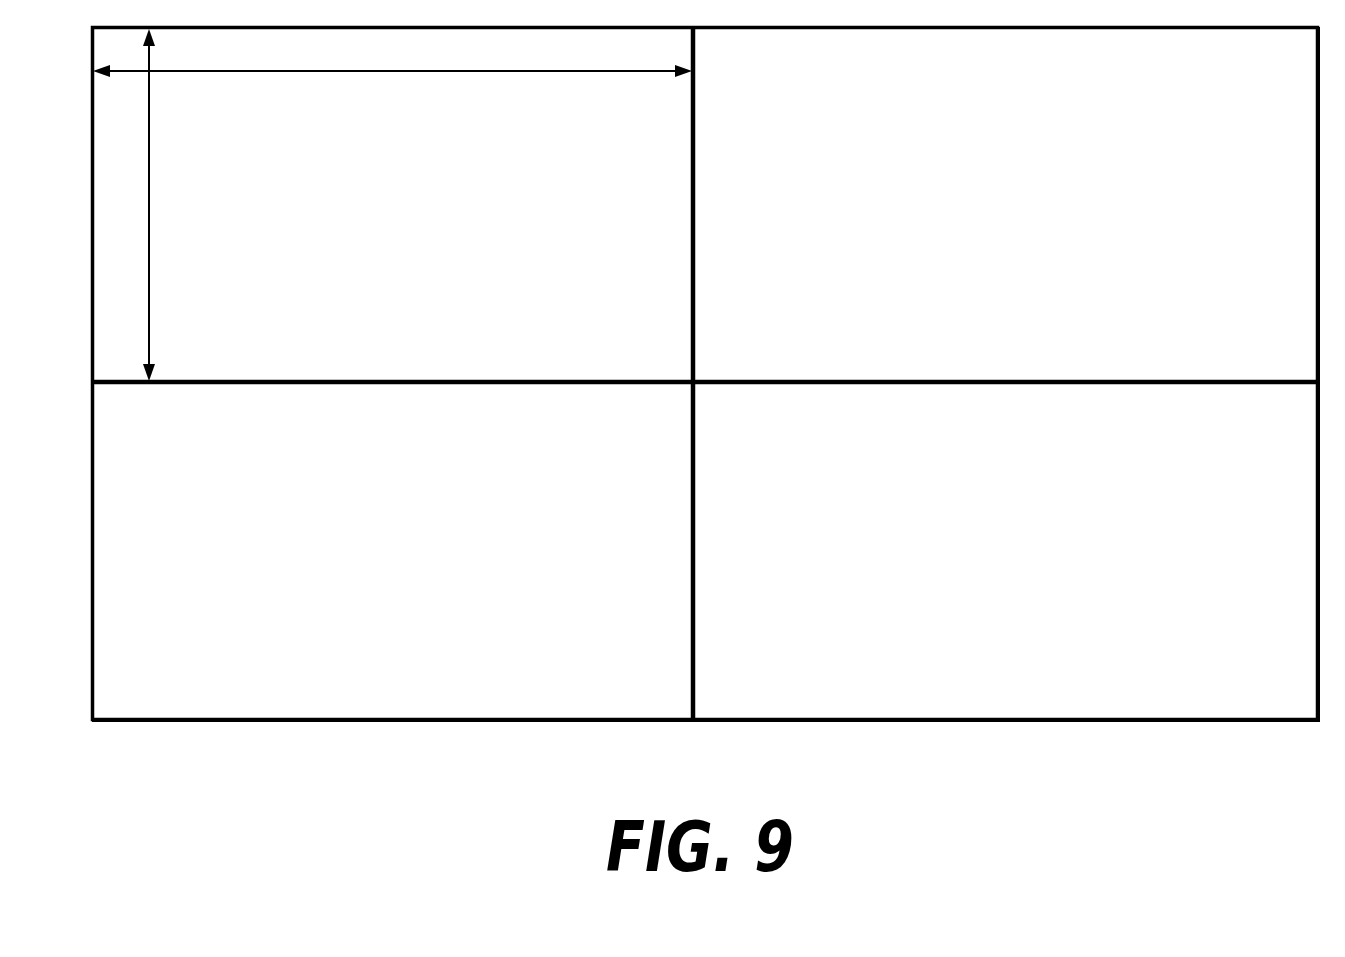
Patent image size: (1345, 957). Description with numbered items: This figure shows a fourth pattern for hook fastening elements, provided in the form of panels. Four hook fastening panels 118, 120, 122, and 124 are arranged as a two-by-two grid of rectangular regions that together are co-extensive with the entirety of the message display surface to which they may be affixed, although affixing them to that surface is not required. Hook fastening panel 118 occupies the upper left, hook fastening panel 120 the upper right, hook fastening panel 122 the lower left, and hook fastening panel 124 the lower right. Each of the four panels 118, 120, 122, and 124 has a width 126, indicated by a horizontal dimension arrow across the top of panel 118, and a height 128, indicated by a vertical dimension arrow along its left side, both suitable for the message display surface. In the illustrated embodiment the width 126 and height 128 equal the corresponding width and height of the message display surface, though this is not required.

The hook fastening panel 118 is at (450, 217).
The hook fastening panel 120 is at (1020, 217).
The hook fastening panel 122 is at (460, 571).
The hook fastening panel 124 is at (1022, 571).
The width 126 is at (232, 72).
The height 128 is at (150, 339).